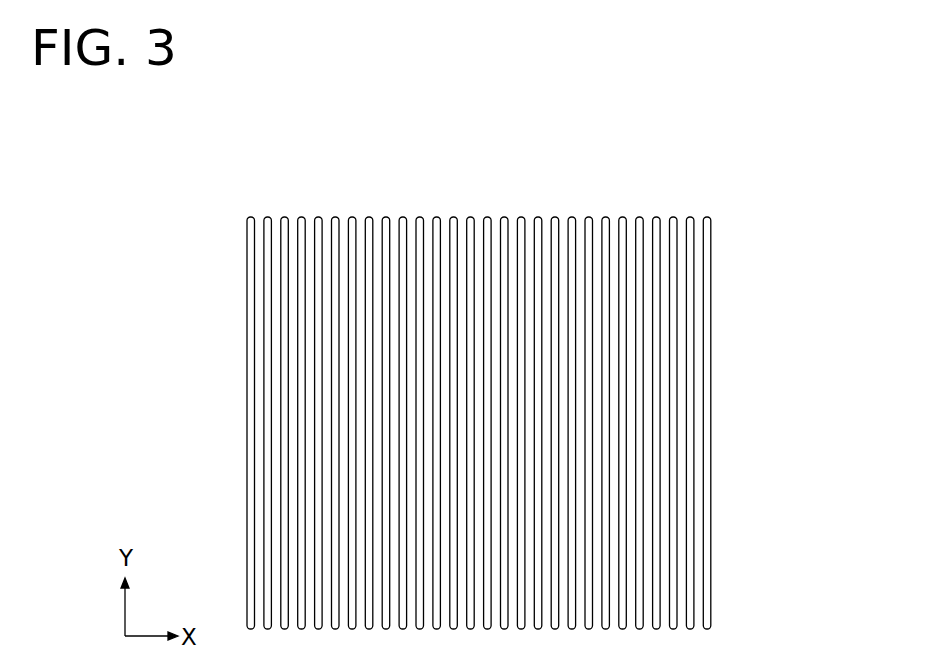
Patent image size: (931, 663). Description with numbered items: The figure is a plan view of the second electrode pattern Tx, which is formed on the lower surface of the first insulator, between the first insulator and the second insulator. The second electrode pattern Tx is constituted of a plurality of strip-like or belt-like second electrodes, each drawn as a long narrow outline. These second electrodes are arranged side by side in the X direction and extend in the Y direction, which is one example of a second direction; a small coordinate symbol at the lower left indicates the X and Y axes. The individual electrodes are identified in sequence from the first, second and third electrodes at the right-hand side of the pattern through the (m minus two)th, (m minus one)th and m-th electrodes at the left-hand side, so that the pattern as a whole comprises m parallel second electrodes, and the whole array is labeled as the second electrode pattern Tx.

The second electrode pattern Tx is at (743, 384).